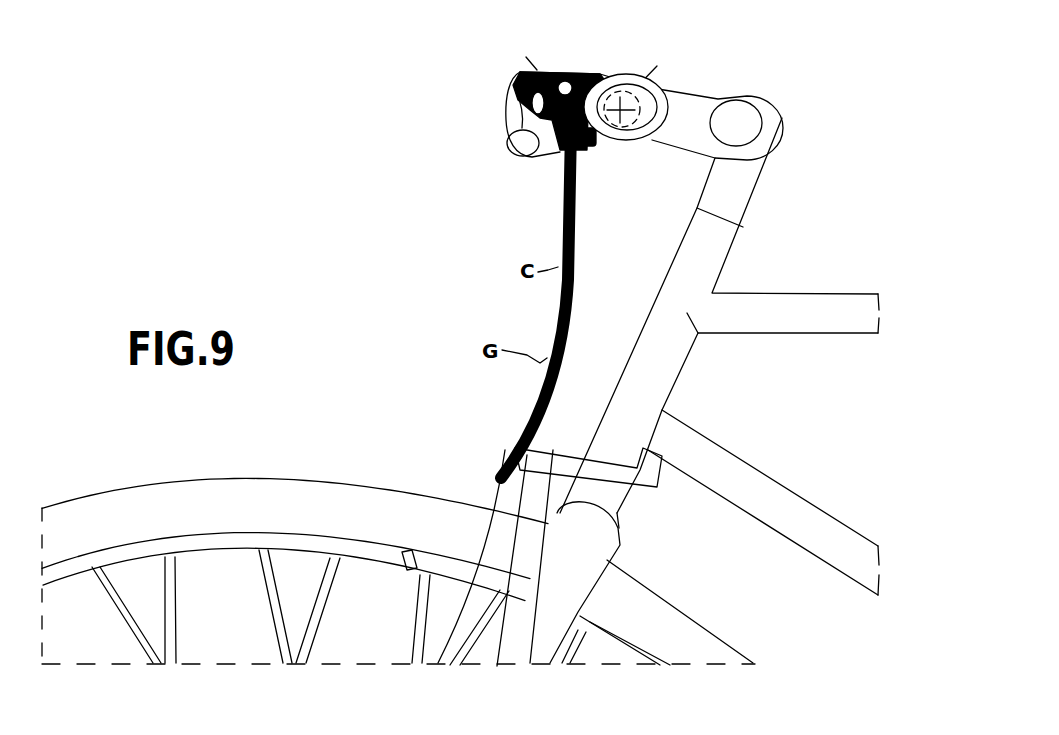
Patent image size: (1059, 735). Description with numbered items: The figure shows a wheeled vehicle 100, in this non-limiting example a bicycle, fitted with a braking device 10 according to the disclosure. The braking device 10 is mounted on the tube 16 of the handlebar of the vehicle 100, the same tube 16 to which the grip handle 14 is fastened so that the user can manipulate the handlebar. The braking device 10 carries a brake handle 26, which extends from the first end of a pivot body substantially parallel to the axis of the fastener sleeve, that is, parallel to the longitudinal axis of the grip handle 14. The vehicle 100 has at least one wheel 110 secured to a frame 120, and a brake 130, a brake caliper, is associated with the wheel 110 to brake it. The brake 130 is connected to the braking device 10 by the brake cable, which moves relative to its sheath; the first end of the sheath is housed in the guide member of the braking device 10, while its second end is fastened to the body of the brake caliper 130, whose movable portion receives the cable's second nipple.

The braking device 10 is at (583, 65).
The grip handle 14 is at (633, 140).
The tube 16 is at (586, 141).
The brake handle 26 is at (520, 155).
The wheeled vehicle 100 is at (368, 317).
The wheel 110 is at (122, 487).
The frame 120 is at (608, 545).
The brake 130 is at (499, 469).